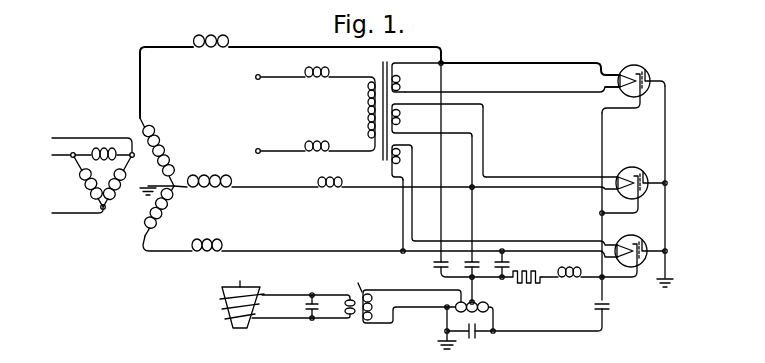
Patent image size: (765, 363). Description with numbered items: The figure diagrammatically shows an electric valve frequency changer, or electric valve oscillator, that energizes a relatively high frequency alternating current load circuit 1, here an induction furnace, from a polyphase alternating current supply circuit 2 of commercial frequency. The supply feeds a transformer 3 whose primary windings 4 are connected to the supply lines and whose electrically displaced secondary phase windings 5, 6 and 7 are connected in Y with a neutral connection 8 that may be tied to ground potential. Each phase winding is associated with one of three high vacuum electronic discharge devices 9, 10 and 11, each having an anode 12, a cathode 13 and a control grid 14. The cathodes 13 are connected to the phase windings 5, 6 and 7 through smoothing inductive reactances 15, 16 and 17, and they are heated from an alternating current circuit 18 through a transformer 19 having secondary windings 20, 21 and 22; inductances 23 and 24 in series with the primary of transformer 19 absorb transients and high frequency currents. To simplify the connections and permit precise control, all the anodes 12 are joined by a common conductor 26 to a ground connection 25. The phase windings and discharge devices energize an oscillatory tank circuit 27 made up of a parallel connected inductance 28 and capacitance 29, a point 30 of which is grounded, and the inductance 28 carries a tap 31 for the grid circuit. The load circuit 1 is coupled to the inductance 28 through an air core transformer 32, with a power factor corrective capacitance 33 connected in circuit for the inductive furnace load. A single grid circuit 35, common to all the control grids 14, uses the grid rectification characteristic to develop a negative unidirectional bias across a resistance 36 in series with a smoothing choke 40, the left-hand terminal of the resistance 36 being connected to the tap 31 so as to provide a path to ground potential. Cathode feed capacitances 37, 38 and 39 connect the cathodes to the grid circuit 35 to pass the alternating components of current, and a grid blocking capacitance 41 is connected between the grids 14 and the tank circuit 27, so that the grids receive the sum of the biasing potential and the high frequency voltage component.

The alternating current load circuit 1 is at (221, 289).
The polyphase alternating current supply circuit 2 is at (70, 141).
The transformer 3 is at (103, 185).
The primary windings 4 is at (104, 164).
The secondary phase winding 5 is at (159, 143).
The secondary phase winding 6 is at (210, 175).
The secondary phase winding 7 is at (158, 228).
The neutral connection 8 is at (176, 189).
The electronic discharge device 9 is at (618, 93).
The electronic discharge device 10 is at (625, 168).
The electronic discharge device 11 is at (622, 240).
The anode 12 is at (644, 98).
The cathode 13 is at (624, 66).
The control grid 14 is at (648, 69).
The smoothing inductive reactance 15 is at (211, 41).
The smoothing inductive reactance 16 is at (334, 181).
The smoothing inductive reactance 17 is at (210, 244).
The alternating current circuit 18 is at (260, 148).
The transformer 19 is at (379, 73).
The secondary winding 20 is at (400, 78).
The secondary winding 21 is at (401, 120).
The secondary winding 22 is at (401, 155).
The inductance 23 is at (303, 73).
The inductance 24 is at (318, 146).
The ground connection 25 is at (668, 280).
The common conductor 26 is at (668, 198).
The tank circuit 27 is at (464, 320).
The inductance 28 is at (482, 306).
The capacitance 29 is at (470, 339).
The point of the tank circuit 30 is at (446, 331).
The tap 31 is at (474, 302).
The air core transformer 32 is at (357, 323).
The capacitance 33 is at (305, 305).
The grid circuit 35 is at (551, 283).
The resistance 36 is at (522, 284).
The cathode feed capacitance 37 is at (432, 265).
The cathode feed capacitance 38 is at (461, 266).
The cathode feed capacitance 39 is at (508, 265).
The smoothing inductance 40 is at (566, 285).
The grid blocking capacitance 41 is at (610, 306).